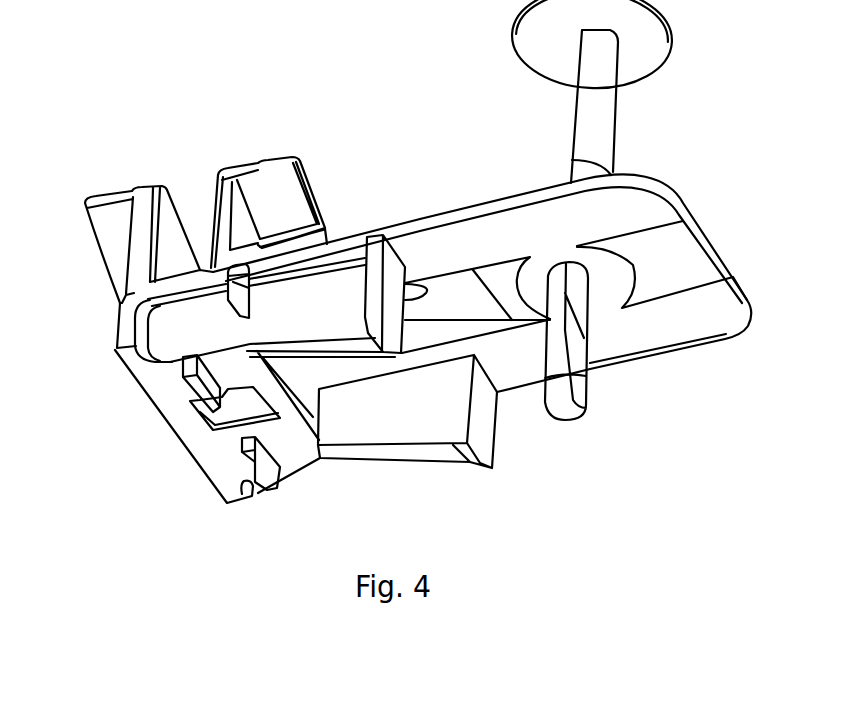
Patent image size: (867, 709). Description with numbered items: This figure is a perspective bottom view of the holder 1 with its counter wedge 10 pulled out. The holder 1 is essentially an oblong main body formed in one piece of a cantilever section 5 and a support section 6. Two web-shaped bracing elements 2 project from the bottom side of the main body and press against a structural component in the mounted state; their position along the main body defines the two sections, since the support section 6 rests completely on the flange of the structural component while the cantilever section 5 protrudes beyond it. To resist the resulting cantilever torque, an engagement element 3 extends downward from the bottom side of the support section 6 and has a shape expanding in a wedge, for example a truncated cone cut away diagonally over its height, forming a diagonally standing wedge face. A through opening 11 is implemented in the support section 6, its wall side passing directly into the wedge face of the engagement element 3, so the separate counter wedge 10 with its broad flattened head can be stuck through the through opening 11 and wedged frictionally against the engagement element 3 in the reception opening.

The holder 1 is at (216, 80).
The bracing element 2 is at (473, 467).
The engagement element 3 is at (570, 414).
The cantilever section 5 is at (295, 511).
The support section 6 is at (703, 402).
The counter wedge 10 is at (600, 119).
The through opening 11 is at (596, 280).